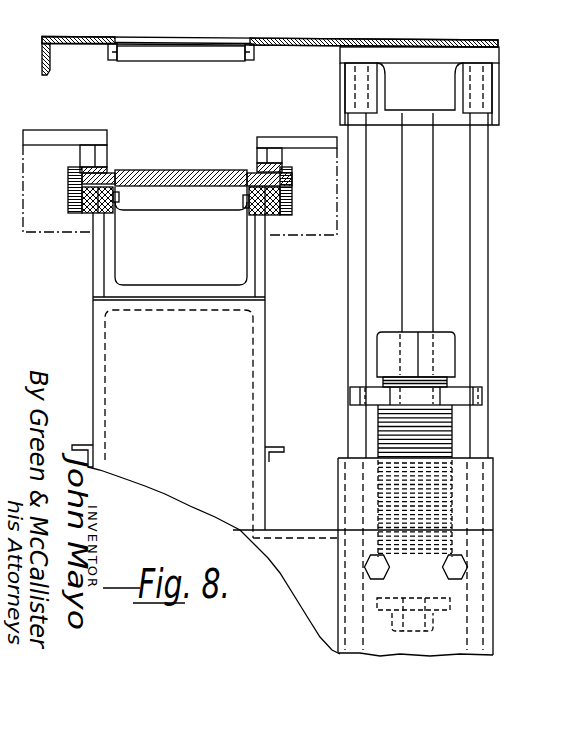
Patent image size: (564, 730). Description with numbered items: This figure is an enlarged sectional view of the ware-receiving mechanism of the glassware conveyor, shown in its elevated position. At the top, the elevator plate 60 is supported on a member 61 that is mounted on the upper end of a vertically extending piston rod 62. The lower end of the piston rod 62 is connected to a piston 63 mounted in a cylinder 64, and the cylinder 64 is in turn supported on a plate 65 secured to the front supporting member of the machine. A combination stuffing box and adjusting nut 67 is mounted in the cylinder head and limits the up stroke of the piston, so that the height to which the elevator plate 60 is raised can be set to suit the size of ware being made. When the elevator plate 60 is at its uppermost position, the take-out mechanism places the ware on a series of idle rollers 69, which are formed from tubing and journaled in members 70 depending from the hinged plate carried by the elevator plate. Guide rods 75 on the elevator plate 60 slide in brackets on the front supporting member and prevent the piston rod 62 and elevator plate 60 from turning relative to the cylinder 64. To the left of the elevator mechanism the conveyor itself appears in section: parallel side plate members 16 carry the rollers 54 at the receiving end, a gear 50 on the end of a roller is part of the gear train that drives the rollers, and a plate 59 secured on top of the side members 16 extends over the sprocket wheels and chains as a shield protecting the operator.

The side plate members 16 is at (105, 150).
The gear 50 is at (290, 175).
The rollers 54 is at (68, 213).
The plate 59 is at (48, 134).
The elevator plate 60 is at (437, 41).
The member 61 is at (443, 88).
The piston rod 62 is at (421, 181).
The piston 63 is at (442, 588).
The cylinder 64 is at (433, 642).
The plate 65 is at (290, 529).
The combination stuffing box and adjusting nut 67 is at (478, 397).
The idle rollers 69 is at (184, 56).
The depending members 70 is at (110, 59).
The guide rods 75 is at (363, 268).